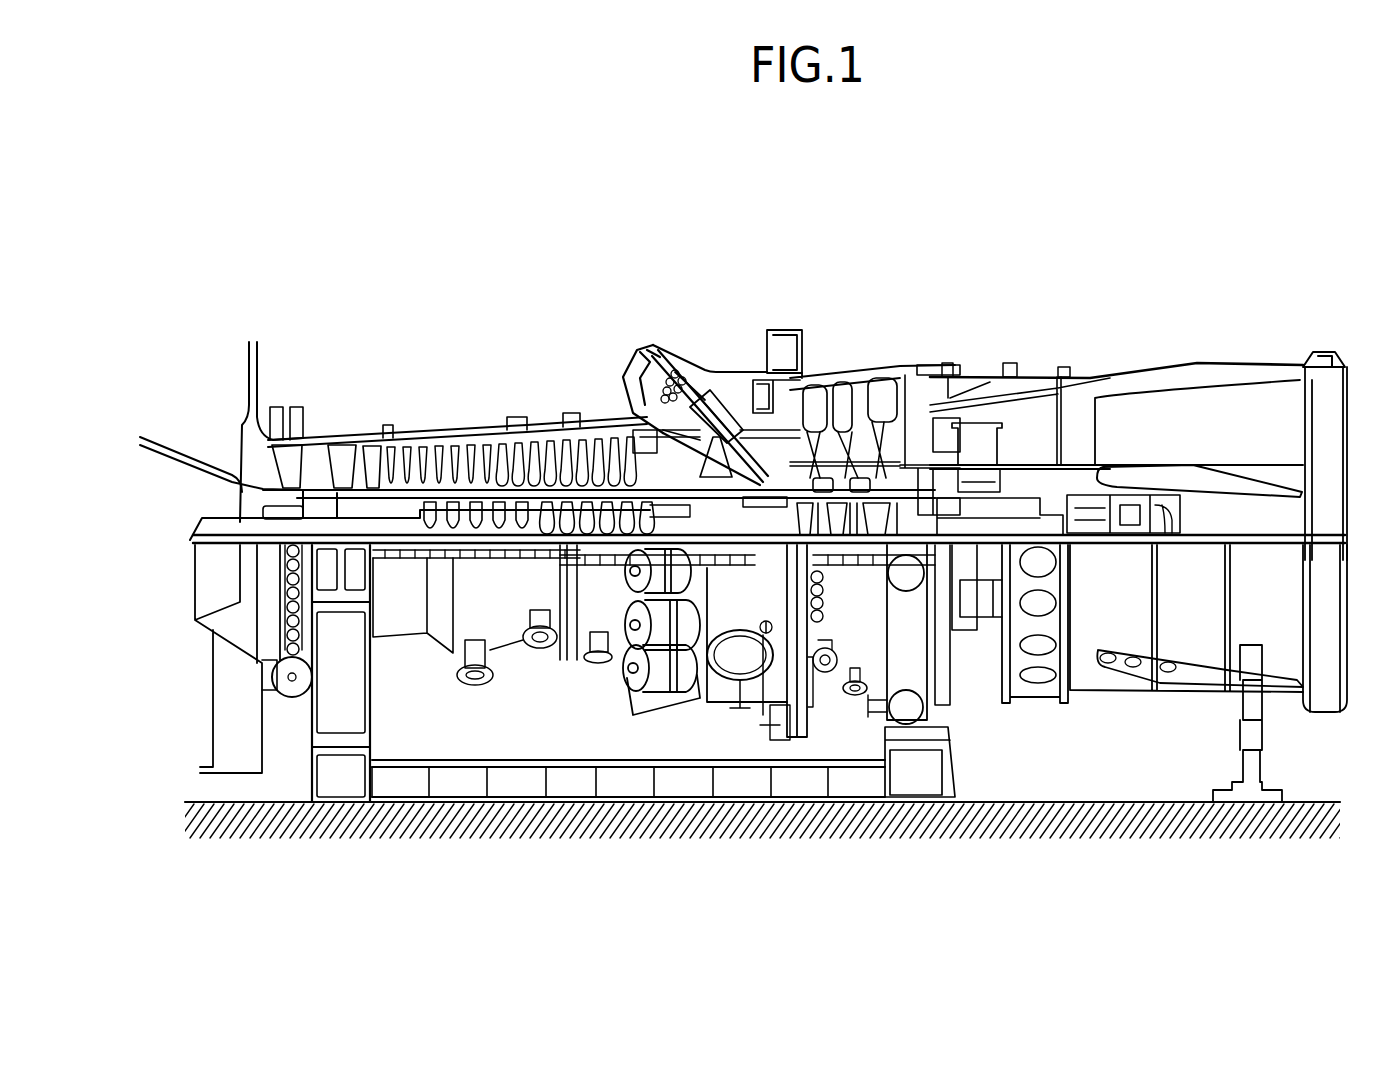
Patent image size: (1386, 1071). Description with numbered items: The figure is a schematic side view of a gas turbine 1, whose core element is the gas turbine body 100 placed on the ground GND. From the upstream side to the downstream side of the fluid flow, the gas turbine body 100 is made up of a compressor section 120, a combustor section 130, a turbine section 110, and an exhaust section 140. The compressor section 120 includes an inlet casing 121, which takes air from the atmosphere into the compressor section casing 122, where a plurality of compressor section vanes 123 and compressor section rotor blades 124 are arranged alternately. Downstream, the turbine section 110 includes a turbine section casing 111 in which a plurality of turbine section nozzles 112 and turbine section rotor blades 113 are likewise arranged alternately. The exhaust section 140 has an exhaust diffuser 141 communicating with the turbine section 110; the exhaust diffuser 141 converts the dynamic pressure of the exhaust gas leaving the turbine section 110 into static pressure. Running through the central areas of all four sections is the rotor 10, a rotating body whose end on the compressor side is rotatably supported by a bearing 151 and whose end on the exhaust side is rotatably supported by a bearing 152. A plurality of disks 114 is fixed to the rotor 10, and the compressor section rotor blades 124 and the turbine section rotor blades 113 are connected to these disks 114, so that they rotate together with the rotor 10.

The gas turbine 1 is at (1280, 198).
The rotor 10 is at (683, 527).
The gas turbine body 100 is at (1290, 368).
The turbine section 110 is at (944, 259).
The turbine section casing 111 is at (878, 387).
The turbine section nozzle 112 is at (828, 440).
The turbine section rotor blade 113 is at (855, 440).
The disk 114 is at (437, 510).
The compressor section 120 is at (615, 264).
The inlet casing 121 is at (231, 452).
The compressor section casing 122 is at (300, 460).
The compressor section vane 123 is at (347, 463).
The compressor section rotor blade 124 is at (368, 463).
The combustor section 130 is at (805, 259).
The exhaust section 140 is at (1328, 257).
The exhaust diffuser 141 is at (1033, 410).
The bearing 151 is at (277, 513).
The bearing 152 is at (987, 515).
The ground GND is at (1148, 802).